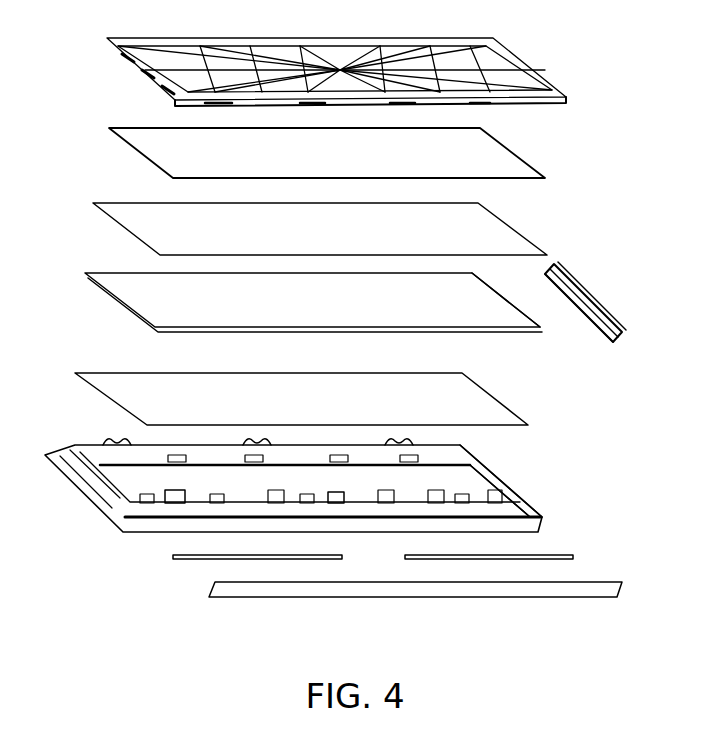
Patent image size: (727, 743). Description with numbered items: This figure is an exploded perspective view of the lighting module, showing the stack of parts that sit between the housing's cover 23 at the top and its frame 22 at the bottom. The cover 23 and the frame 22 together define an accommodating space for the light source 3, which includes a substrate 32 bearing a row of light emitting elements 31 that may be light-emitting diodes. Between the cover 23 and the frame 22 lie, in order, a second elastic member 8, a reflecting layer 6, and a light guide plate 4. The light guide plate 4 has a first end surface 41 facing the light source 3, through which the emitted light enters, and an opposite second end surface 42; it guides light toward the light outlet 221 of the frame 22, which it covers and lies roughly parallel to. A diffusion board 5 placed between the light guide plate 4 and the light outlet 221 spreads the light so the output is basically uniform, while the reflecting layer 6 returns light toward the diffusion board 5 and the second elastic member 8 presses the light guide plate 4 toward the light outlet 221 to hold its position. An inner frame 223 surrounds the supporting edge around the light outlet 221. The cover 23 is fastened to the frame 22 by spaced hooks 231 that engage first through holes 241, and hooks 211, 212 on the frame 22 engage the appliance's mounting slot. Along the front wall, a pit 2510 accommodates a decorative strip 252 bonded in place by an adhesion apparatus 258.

The cover 23 is at (548, 86).
The hooks 231 is at (487, 106).
The second elastic member 8 is at (541, 178).
The reflecting layer 6 is at (519, 236).
The light guide plate 4 is at (510, 313).
The first end surface 41 is at (487, 286).
The second end surface 42 is at (122, 298).
The light source 3 is at (574, 280).
The substrate 32 is at (590, 310).
The light emitting elements 31 is at (600, 330).
The diffusion board 5 is at (528, 424).
The frame 22 is at (538, 506).
The hook 212 is at (108, 434).
The hook 211 is at (179, 497).
The first through holes 241 is at (331, 498).
The light outlet 221 is at (452, 477).
The inner frame 223 is at (505, 478).
The pit 2510 is at (510, 524).
The adhesion apparatus 258 is at (312, 558).
The decorative strip 252 is at (616, 587).